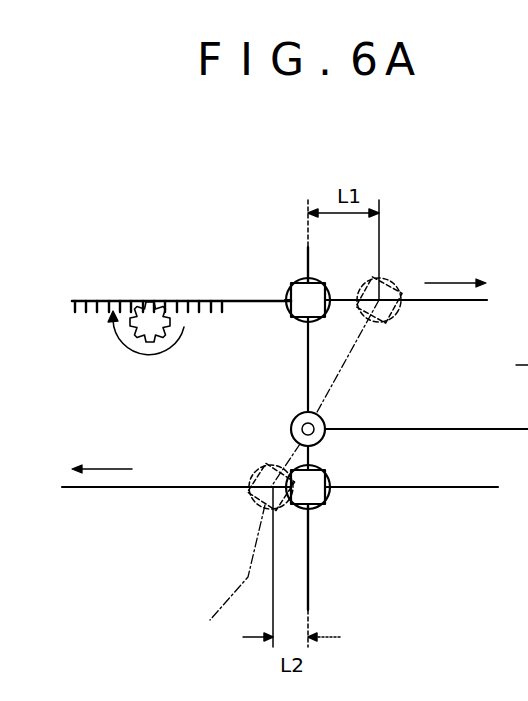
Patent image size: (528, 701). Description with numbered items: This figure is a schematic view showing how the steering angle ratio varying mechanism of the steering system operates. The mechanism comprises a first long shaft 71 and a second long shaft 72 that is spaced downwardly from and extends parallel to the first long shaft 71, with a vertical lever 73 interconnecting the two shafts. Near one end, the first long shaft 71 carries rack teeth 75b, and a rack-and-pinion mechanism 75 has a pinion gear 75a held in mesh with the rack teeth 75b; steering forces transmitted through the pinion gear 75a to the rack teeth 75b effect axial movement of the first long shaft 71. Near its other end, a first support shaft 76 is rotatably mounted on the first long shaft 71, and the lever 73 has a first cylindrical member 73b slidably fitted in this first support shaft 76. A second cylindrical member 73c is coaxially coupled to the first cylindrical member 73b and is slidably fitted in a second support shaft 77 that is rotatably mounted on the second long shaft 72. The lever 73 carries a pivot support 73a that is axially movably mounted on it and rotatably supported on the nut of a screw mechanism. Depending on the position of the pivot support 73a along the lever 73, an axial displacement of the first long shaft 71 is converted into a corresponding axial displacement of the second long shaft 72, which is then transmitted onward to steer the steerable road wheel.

The first long shaft 71 is at (440, 302).
The second long shaft 72 is at (90, 490).
The vertical lever 73 is at (360, 420).
The pivot support 73a is at (319, 444).
The first cylindrical member 73b is at (302, 266).
The second cylindrical member 73c is at (310, 565).
The rack-and-pinion mechanism 75 is at (181, 379).
The pinion gear 75a is at (154, 352).
The rack teeth 75b is at (242, 303).
The first support shaft 76 is at (290, 283).
The second support shaft 77 is at (248, 505).